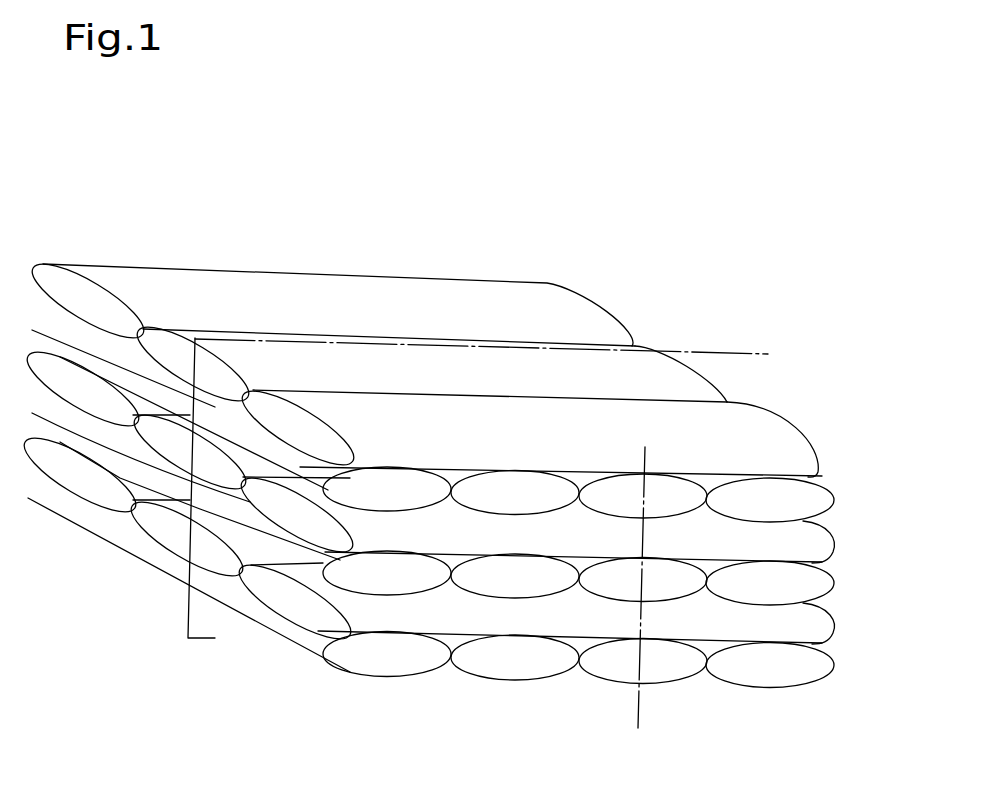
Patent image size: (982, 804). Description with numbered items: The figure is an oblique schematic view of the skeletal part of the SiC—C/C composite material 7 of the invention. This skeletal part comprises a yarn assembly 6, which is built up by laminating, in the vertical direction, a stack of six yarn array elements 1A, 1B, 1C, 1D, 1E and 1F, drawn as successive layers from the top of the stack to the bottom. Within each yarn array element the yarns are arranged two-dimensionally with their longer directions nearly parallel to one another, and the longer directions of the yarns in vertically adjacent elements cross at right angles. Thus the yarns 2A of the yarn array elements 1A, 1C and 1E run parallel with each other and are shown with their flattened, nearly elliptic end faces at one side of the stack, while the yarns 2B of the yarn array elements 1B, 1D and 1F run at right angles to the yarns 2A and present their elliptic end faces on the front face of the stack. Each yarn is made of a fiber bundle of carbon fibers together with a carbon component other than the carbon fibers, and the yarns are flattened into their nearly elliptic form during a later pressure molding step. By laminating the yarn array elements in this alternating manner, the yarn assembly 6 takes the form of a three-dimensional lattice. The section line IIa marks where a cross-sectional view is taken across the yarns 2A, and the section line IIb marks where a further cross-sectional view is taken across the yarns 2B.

The yarn array element 1A is at (462, 370).
The yarn array element 1B is at (841, 481).
The yarn array element 1C is at (841, 525).
The yarn array element 1D is at (841, 567).
The yarn array element 1E is at (841, 607).
The yarn array element 1F is at (841, 647).
The yarns 2A is at (375, 357).
The yarns 2B is at (143, 372).
The yarn assembly 6 is at (684, 326).
The SiC—C/C composite material 7 is at (828, 414).
The line IIa— IIa is at (496, 495).
The line IIb— IIb is at (639, 728).